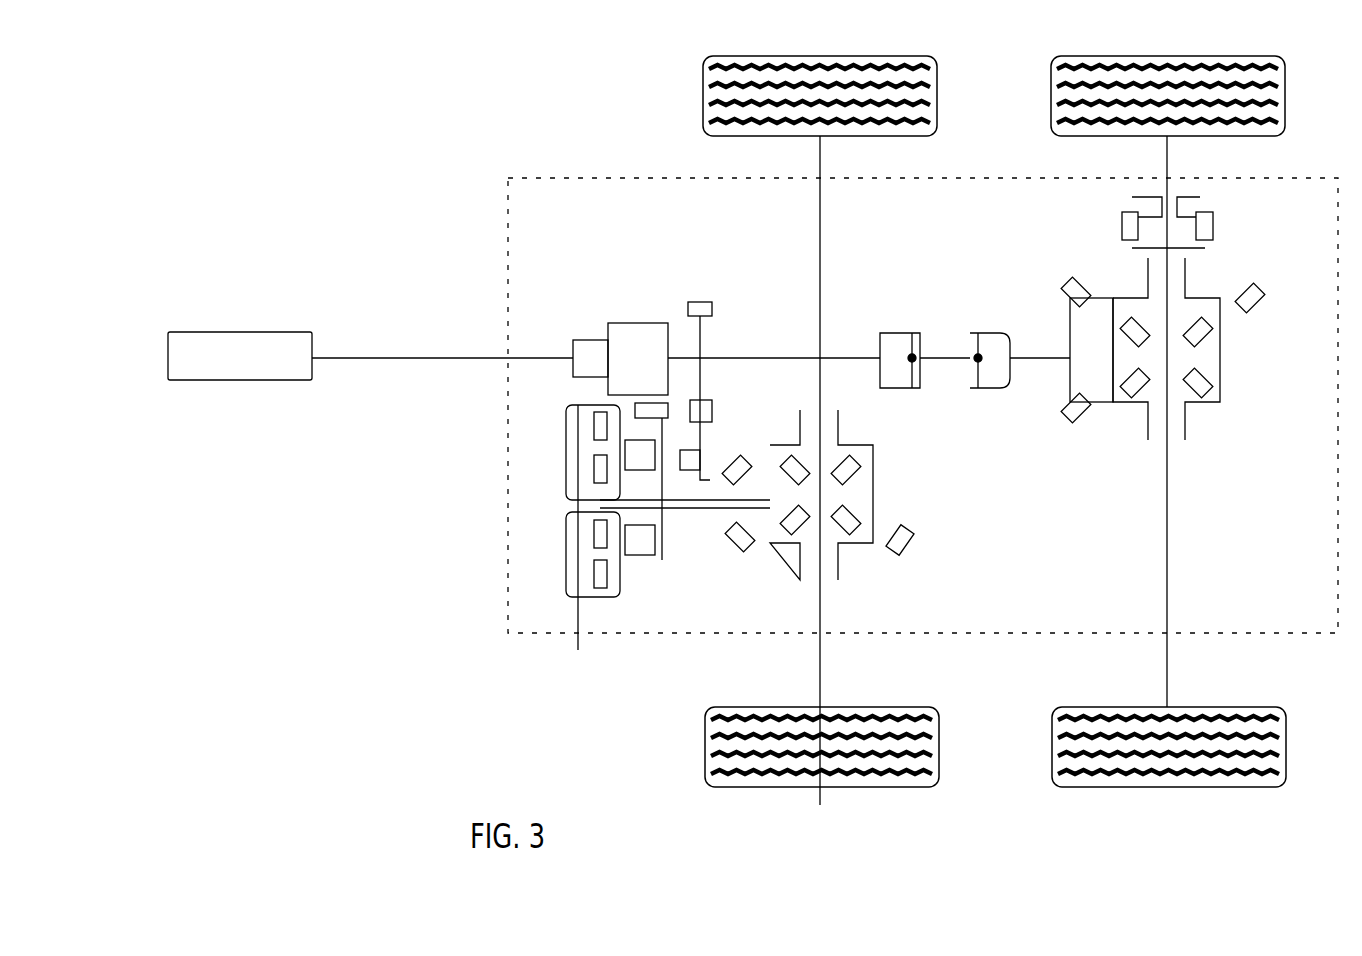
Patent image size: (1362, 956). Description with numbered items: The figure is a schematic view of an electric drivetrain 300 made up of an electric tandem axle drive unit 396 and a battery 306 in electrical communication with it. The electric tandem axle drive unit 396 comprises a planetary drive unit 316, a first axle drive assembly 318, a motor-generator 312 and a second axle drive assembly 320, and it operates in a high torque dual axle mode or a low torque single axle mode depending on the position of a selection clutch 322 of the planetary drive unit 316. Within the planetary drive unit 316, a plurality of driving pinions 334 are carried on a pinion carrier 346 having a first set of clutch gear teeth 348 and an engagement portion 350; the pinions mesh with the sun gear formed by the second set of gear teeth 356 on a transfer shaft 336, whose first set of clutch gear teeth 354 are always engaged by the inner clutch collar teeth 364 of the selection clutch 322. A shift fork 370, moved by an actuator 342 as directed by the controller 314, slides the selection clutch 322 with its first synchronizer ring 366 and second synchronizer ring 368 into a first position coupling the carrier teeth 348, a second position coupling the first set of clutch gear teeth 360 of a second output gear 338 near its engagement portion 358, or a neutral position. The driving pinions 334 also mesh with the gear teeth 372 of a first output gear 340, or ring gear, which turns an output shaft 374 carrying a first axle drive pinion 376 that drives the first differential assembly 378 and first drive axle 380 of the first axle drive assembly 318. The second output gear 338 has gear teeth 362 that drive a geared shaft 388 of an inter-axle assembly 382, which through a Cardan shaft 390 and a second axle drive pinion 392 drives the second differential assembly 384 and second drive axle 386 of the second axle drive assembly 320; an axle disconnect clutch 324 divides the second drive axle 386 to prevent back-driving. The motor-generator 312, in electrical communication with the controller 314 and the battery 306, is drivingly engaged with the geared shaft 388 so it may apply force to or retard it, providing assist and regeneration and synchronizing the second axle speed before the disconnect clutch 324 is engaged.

The electric drivetrain 300 is at (265, 100).
The battery 306 is at (220, 332).
The motor-generator 312 is at (606, 386).
The controller 314 is at (590, 340).
The planetary drive unit 316 is at (535, 617).
The first axle drive assembly 318 is at (852, 614).
The second axle drive assembly 320 is at (1202, 480).
The selection clutch 322 is at (737, 614).
The axle disconnect clutch 324 is at (1200, 203).
The driving pinions 334 is at (635, 570).
The transfer shaft 336 is at (680, 545).
The second output gear 338 is at (702, 410).
The first output gear 340 is at (575, 540).
The actuator 342 is at (650, 400).
The pinion carrier 346 is at (615, 560).
The first set of clutch gear teeth 348 is at (640, 470).
The engagement portion 350 is at (648, 580).
The first set of clutch gear teeth 354 is at (650, 555).
The second set of gear teeth 356 is at (585, 522).
The engagement portion 358 is at (695, 455).
The first set of clutch gear teeth 360 is at (700, 540).
The gear teeth 362 is at (708, 395).
The inner clutch collar teeth 364 is at (692, 525).
The first synchronizer ring 366 is at (600, 432).
The second synchronizer ring 368 is at (670, 548).
The shift fork 370 is at (568, 410).
The gear teeth 372 is at (578, 543).
The output shaft 374 is at (742, 462).
The first axle drive pinion 376 is at (742, 487).
The first differential assembly 378 is at (873, 487).
The first drive axle 380 is at (820, 285).
The inter-axle assembly 382 is at (992, 296).
The second differential assembly 384 is at (1220, 390).
The second drive axle 386 is at (1167, 547).
The geared shaft 388 is at (798, 352).
The Cardan shaft 390 is at (948, 362).
The second axle drive pinion 392 is at (1070, 373).
The electric tandem axle drive unit 396 is at (506, 176).